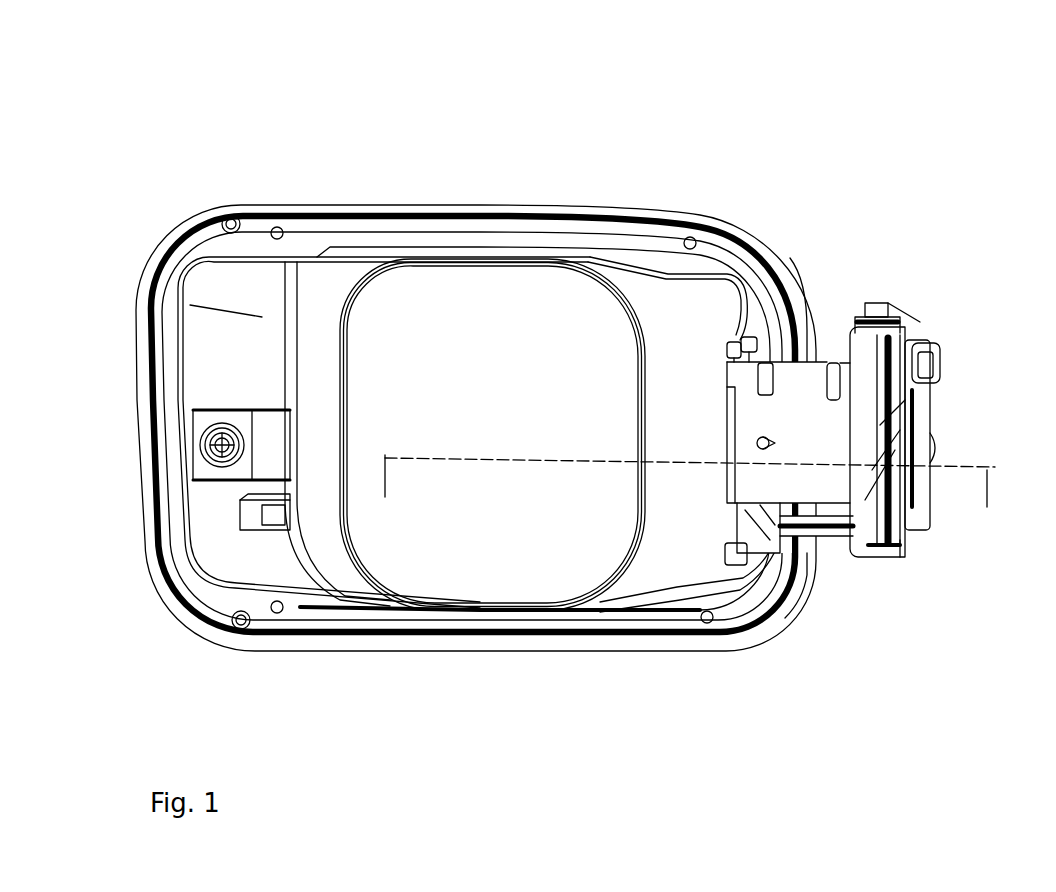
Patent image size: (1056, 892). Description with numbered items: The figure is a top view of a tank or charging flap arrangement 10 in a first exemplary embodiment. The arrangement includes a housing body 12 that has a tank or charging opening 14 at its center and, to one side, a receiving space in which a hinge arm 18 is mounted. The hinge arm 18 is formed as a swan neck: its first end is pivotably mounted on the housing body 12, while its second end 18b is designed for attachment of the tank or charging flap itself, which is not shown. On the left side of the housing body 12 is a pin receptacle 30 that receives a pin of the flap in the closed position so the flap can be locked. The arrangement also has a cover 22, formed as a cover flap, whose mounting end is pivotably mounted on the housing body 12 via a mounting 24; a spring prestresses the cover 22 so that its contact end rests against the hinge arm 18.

The tank or charging flap arrangement 10 is at (328, 172).
The housing body 12 is at (578, 223).
The tank or charging opening 14 is at (465, 375).
The hinge arm 18 is at (790, 395).
The second end 18b is at (915, 416).
The cover 22 is at (748, 377).
The mounting 24 is at (736, 238).
The pin receptacle 30 is at (202, 447).